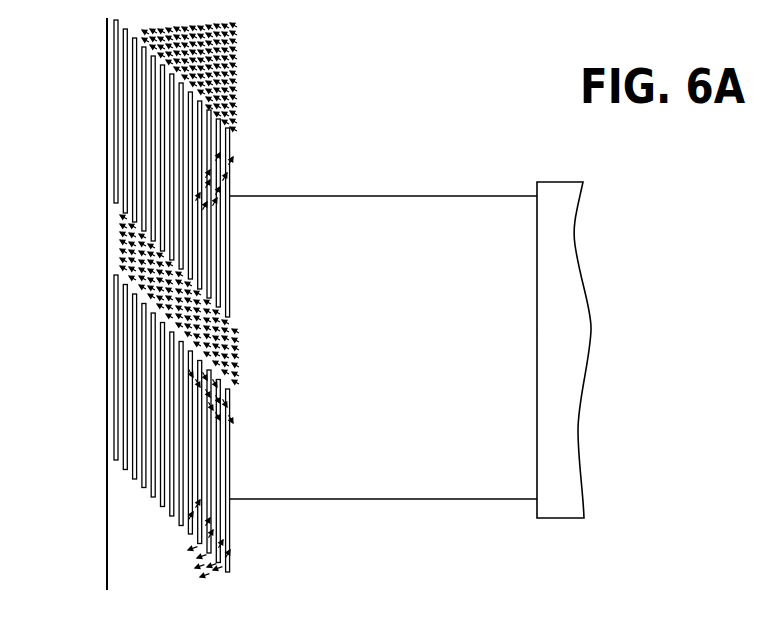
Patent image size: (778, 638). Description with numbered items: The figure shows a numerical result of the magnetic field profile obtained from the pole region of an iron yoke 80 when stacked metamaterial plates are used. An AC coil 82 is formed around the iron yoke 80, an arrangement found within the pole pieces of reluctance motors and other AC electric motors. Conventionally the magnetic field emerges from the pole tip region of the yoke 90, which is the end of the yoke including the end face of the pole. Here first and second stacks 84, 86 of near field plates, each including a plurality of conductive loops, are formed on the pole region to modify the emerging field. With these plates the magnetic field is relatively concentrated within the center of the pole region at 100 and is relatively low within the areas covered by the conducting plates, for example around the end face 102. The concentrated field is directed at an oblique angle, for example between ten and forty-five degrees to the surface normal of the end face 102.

The iron yoke 80 is at (387, 378).
The AC coil 82 is at (540, 192).
The first stack 84 is at (118, 157).
The second stack 86 is at (118, 420).
The pole tip region of the yoke 90 is at (333, 211).
The center of the pole region 100 is at (220, 342).
The end face 102 is at (232, 478).